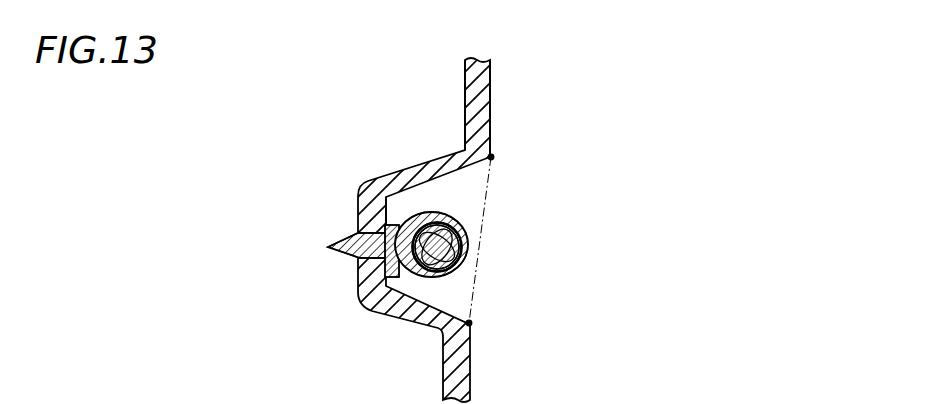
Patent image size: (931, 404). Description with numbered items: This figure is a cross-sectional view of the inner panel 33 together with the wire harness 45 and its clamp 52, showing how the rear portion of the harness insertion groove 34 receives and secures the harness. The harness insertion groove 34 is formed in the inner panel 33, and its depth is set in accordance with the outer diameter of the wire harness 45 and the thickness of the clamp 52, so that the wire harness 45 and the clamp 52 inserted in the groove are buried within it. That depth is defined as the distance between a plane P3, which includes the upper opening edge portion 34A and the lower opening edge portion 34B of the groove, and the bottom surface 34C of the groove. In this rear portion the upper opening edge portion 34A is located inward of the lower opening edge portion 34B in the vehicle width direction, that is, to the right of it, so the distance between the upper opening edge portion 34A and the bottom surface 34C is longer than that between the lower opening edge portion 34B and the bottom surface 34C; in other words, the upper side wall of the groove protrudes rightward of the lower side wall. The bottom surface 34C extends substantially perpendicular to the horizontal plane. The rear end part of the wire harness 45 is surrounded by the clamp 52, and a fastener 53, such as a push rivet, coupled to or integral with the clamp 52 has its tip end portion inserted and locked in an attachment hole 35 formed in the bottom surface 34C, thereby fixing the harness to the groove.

The inner panel 33 is at (489, 102).
The harness insertion groove 34 is at (404, 193).
The upper opening edge portion 34A is at (492, 157).
The lower opening edge portion 34B is at (471, 324).
The bottom surface 34C is at (390, 213).
The plane P3 is at (487, 189).
The wire harness 45 is at (468, 232).
The clamp 52 is at (466, 257).
The fastener 53 is at (331, 252).
The attachment hole 35 is at (356, 259).